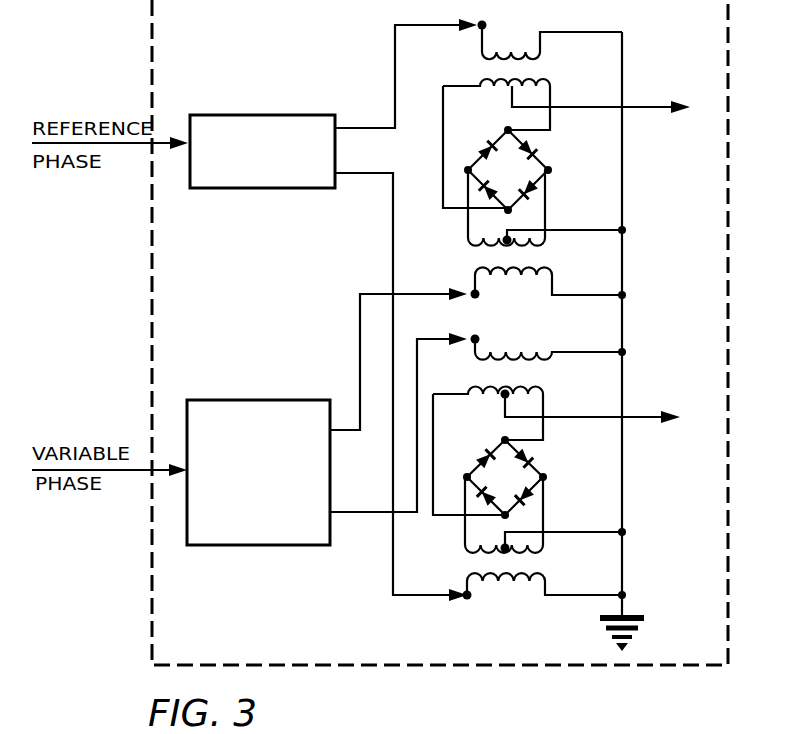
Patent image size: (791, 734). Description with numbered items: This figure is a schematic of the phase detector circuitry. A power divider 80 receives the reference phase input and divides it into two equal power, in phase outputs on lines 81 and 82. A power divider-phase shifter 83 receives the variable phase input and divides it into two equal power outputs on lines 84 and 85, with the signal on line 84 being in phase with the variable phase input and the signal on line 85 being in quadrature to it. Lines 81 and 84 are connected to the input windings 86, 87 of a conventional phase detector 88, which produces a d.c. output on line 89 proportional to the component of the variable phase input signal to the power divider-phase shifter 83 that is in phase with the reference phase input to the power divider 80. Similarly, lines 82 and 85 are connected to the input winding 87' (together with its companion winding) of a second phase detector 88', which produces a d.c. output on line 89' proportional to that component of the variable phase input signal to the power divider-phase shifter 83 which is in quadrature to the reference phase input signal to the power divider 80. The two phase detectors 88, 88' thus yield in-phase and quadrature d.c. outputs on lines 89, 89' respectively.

The power divider 80 is at (245, 115).
The line 81 is at (395, 45).
The line 82 is at (392, 255).
The power divider-phase shifter 83 is at (245, 400).
The line 84 is at (358, 322).
The line 85 is at (367, 517).
The input winding 86 is at (487, 60).
The input winding 87 is at (517, 271).
The input winding 87' is at (517, 493).
The phase detector 88 is at (524, 150).
The phase detector 88' is at (535, 477).
The line 89 is at (602, 125).
The line 89' is at (600, 435).